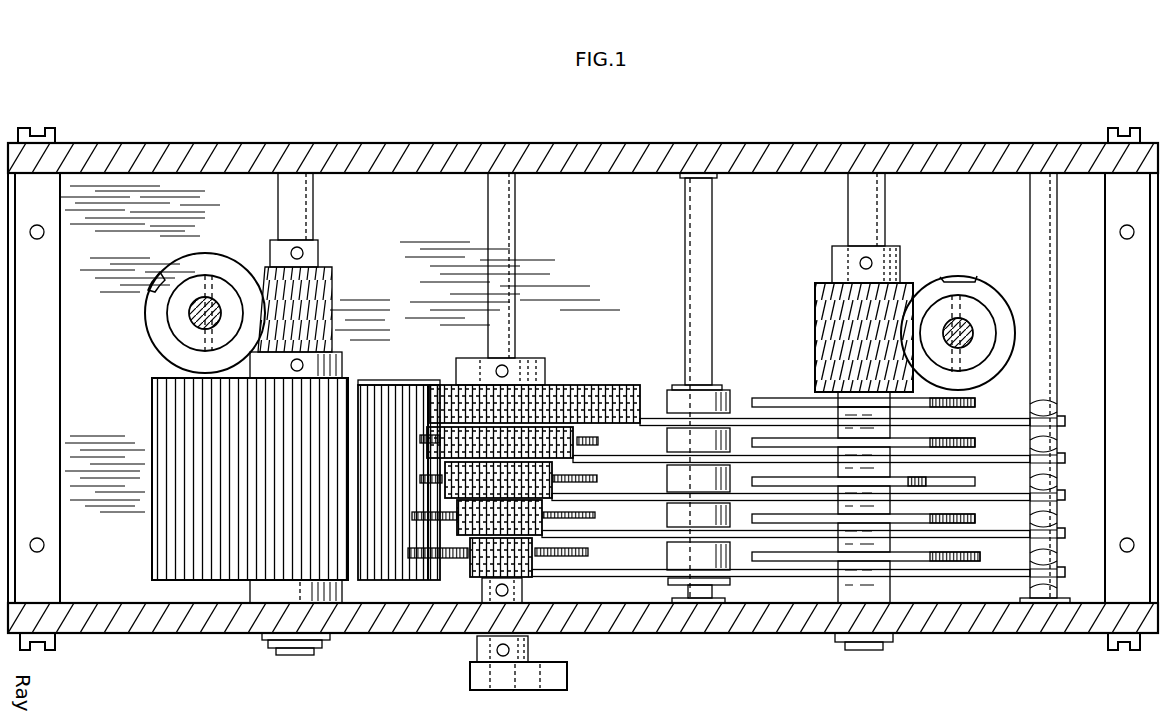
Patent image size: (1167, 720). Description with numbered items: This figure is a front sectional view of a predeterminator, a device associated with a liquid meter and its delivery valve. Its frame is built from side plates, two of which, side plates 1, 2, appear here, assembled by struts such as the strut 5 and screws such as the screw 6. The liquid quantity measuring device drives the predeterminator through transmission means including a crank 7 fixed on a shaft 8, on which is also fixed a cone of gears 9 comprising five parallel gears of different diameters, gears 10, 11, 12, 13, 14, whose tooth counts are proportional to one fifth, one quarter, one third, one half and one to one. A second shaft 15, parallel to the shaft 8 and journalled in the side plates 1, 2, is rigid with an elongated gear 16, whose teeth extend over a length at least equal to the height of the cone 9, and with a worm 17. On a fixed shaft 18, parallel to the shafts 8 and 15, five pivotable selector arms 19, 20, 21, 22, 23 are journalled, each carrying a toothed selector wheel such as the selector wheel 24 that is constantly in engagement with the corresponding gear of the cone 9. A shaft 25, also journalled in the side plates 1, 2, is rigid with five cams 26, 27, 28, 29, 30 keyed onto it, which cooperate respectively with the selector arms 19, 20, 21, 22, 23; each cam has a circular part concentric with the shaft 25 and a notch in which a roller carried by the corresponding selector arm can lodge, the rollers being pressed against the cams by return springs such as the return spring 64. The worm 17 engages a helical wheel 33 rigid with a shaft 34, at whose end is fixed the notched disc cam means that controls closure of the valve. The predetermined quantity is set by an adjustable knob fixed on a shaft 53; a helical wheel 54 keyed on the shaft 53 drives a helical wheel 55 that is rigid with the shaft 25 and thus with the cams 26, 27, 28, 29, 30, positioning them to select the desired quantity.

The side plate 1 is at (400, 626).
The side plate 2 is at (122, 150).
The strut 5 is at (40, 303).
The screw 6 is at (48, 131).
The crank 7 is at (472, 678).
The shaft 8 is at (497, 235).
The cone of gears 9 is at (562, 378).
The gear 10 is at (532, 577).
The gear 11 is at (575, 530).
The gear 12 is at (572, 492).
The gear 13 is at (578, 452).
The gear 14 is at (570, 390).
The second shaft 15 is at (292, 660).
The elongated gear 16 is at (184, 437).
The worm 17 is at (333, 285).
The fixed shaft 18 is at (697, 238).
The selector arm 19 is at (773, 572).
The selector arm 20 is at (722, 540).
The selector arm 21 is at (722, 494).
The selector arm 22 is at (698, 455).
The selector arm 23 is at (649, 393).
The toothed selector wheel 24 is at (600, 442).
The shaft 25 is at (856, 206).
The cam 26 is at (812, 552).
The cam 27 is at (960, 522).
The cam 28 is at (948, 482).
The cam 29 is at (978, 438).
The cam 30 is at (775, 400).
The helical wheel 33 is at (182, 262).
The shaft 34 is at (215, 302).
The shaft 53 is at (972, 325).
The helical wheel 54 is at (938, 285).
The helical wheel 55 is at (898, 262).
The return spring 64 is at (1062, 415).